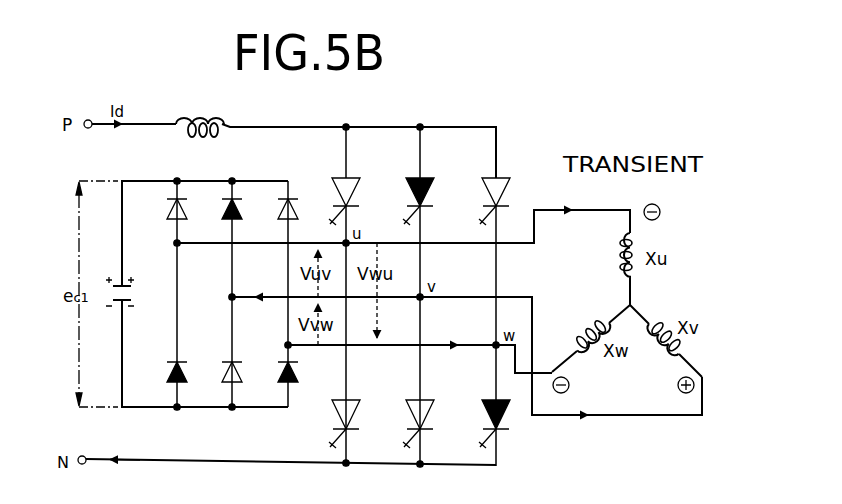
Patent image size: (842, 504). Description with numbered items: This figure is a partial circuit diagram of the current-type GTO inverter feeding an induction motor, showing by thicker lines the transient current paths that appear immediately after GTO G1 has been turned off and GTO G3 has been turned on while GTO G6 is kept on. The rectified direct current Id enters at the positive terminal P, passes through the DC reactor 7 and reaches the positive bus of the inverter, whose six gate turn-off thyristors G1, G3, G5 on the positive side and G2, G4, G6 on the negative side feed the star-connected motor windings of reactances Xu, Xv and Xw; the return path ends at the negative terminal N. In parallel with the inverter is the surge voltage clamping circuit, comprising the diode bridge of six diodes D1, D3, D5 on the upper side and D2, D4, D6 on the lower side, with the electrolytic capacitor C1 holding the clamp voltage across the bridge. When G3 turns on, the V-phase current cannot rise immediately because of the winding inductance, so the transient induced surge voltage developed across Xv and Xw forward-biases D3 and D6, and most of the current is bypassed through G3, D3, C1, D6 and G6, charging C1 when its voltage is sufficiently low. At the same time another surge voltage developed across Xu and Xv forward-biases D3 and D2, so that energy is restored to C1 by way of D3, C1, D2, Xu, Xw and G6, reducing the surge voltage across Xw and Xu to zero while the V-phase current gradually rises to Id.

The DC reactor 7 is at (204, 108).
The diode D1 is at (167, 208).
The diode D2 is at (167, 374).
The diode D3 is at (228, 208).
The diode D4 is at (228, 374).
The diode D5 is at (284, 208).
The diode D6 is at (280, 374).
The GTO G1 is at (334, 177).
The GTO G2 is at (332, 402).
The GTO G3 is at (409, 177).
The GTO G4 is at (406, 402).
The GTO G5 is at (484, 177).
The GTO G6 is at (483, 402).
The electrolytic capacitor C1 is at (132, 291).